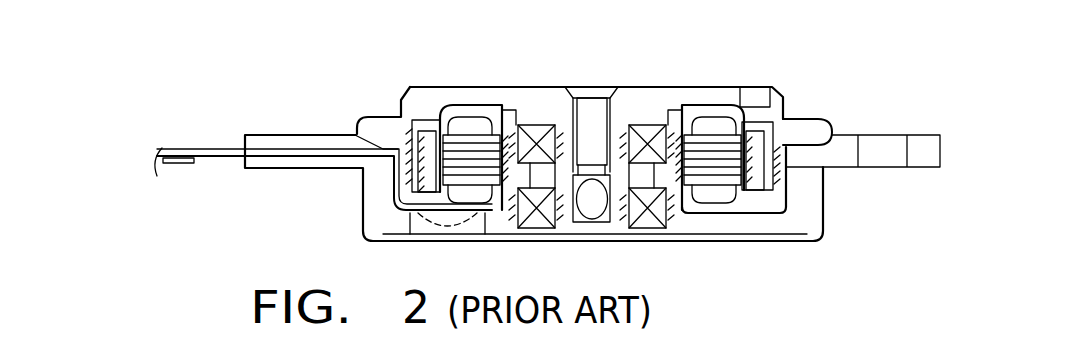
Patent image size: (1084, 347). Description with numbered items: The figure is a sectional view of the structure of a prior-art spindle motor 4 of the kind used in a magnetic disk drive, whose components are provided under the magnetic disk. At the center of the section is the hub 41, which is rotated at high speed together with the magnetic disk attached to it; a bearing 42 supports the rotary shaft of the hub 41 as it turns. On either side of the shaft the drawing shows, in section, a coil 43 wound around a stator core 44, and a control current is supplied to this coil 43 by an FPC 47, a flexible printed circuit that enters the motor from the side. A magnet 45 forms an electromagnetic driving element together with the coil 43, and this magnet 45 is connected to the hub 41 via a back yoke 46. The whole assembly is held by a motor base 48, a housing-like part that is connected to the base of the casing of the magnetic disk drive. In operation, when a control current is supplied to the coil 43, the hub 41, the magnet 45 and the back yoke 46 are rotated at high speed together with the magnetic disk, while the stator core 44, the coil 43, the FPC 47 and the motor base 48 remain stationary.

The spindle motor 4 is at (393, 61).
The hub 41 is at (633, 100).
The bearing 42 is at (544, 125).
The coil 43 is at (703, 160).
The stator core 44 is at (463, 125).
The magnet 45 is at (757, 145).
The back yoke 46 is at (773, 143).
The FPC (flexible printed circuit) 47 is at (218, 163).
The motor base 48 is at (803, 205).